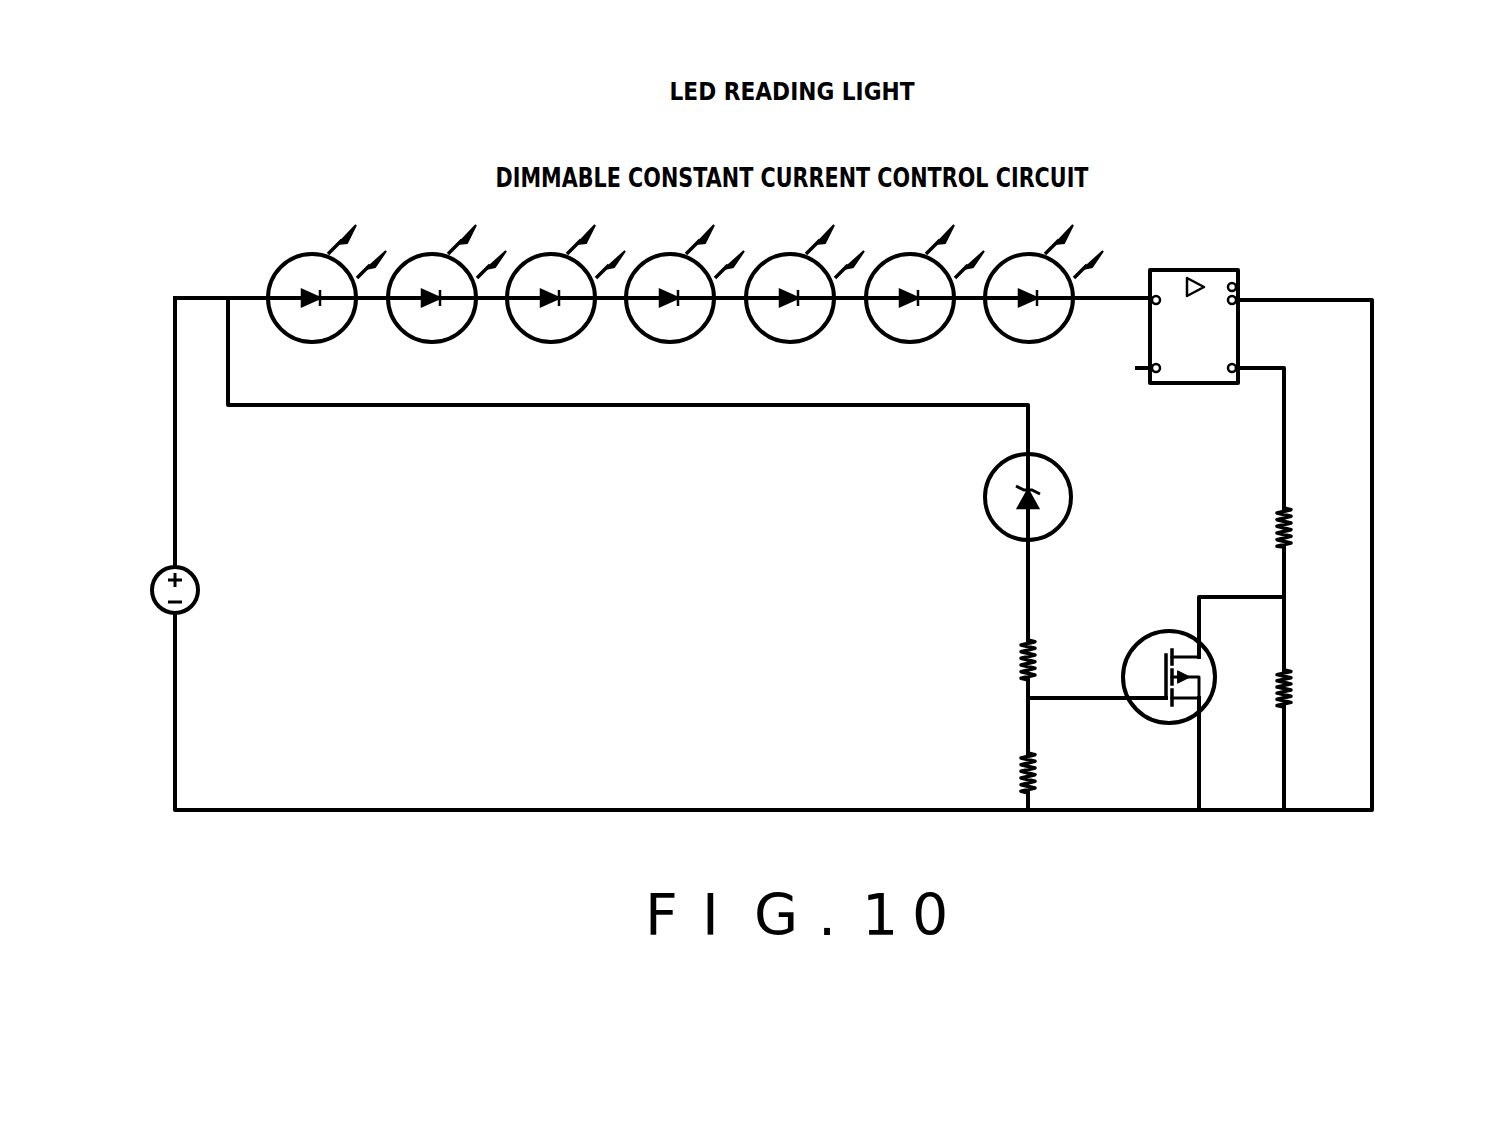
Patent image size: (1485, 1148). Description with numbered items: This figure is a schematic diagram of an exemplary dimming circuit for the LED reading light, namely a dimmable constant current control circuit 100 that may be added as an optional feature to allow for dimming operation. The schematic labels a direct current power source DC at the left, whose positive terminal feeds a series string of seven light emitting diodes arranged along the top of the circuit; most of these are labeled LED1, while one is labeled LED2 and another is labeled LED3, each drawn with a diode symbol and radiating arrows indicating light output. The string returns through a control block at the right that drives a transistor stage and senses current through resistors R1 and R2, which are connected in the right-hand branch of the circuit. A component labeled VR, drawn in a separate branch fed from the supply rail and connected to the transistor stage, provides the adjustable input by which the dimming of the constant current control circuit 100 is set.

The dimmable constant current control circuit 100 is at (1393, 660).
The DC power source DC is at (162, 590).
The light emitting diode LED1 is at (685, 299).
The light emitting diode LED2 is at (685, 299).
The light emitting diode LED3 is at (925, 311).
The variable resistor / dimmer VR is at (1009, 497).
The resistor R1 is at (1265, 527).
The resistor R2 is at (1267, 688).